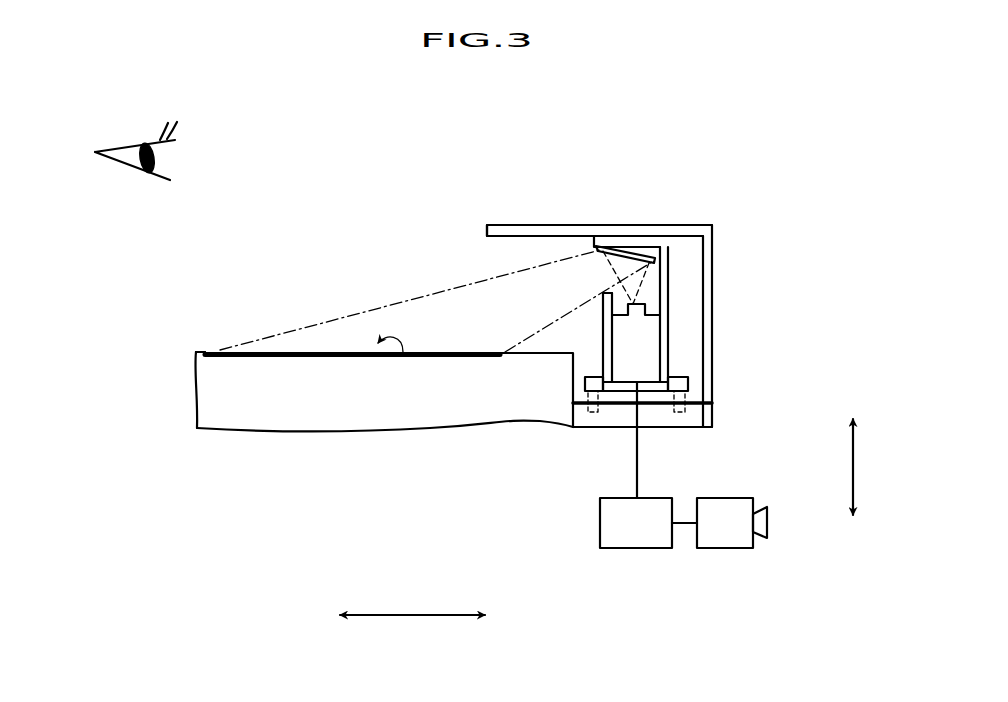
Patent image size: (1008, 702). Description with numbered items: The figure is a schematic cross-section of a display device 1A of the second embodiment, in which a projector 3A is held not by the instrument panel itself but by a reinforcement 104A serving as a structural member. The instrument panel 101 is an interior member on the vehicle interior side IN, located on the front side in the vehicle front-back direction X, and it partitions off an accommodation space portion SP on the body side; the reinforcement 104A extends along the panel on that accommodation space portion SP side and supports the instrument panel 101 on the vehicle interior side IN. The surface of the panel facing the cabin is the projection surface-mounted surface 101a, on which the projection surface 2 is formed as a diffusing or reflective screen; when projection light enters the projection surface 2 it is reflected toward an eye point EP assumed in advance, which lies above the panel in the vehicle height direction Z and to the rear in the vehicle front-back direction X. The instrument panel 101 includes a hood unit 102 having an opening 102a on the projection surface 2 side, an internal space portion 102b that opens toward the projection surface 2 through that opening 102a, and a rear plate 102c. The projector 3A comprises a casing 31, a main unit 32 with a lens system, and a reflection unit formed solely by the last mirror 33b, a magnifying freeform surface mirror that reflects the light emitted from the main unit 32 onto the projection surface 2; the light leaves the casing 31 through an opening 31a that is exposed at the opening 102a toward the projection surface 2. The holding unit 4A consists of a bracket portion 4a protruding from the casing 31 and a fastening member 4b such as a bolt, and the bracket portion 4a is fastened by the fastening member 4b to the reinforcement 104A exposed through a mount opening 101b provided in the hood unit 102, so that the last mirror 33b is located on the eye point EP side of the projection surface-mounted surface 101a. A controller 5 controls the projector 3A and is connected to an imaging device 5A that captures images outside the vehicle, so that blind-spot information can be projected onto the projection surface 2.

The eye point EP is at (124, 143).
The vehicle interior side IN is at (243, 259).
The instrument panel 101 is at (206, 332).
The projection surface-mounted surface 101a is at (202, 350).
The mount opening 101b is at (573, 404).
The projection surface 2 is at (401, 355).
The display device 1A is at (458, 279).
The holding unit 4A is at (661, 300).
The hood unit 102 is at (557, 230).
The opening 102a is at (487, 237).
The internal space portion 102b is at (588, 243).
The rear plate 102c is at (713, 365).
The projector 3A is at (667, 345).
The last mirror 33b is at (648, 250).
The main unit 32 is at (641, 333).
The casing 31 is at (670, 340).
The opening 31a is at (607, 292).
The fastening member 4b is at (585, 380).
The bracket portion 4a is at (595, 413).
The reinforcement 104A is at (582, 468).
The controller 5 is at (635, 552).
The imaging device 5A is at (720, 552).
The accommodation space portion SP is at (294, 457).
The vehicle front-back direction X is at (413, 617).
The vehicle height direction Z is at (857, 460).